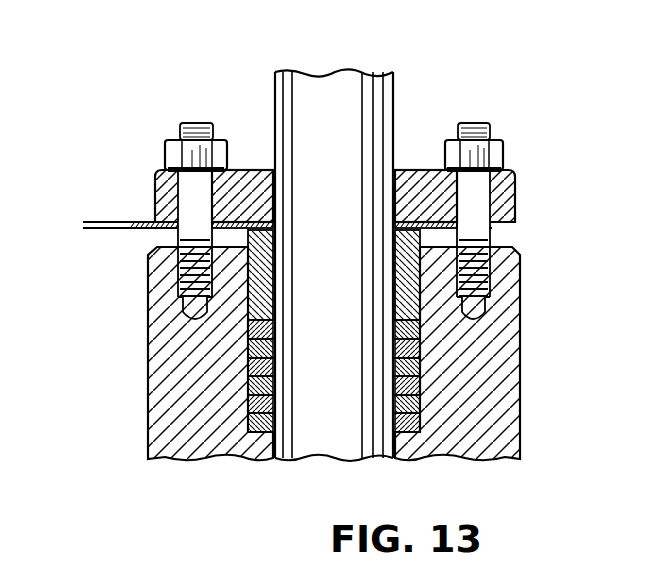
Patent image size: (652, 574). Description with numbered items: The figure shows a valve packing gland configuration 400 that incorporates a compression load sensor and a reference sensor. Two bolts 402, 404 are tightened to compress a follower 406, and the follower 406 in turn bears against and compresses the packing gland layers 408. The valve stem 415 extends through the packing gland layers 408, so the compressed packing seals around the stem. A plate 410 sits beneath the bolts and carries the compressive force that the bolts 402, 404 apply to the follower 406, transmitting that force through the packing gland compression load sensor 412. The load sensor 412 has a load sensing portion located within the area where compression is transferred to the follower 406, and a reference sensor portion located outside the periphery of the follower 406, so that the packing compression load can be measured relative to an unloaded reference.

The valve packing gland configuration 400 is at (137, 370).
The bolt 402 is at (192, 122).
The bolt 404 is at (478, 122).
The follower 406 is at (420, 302).
The packing gland layers 408 is at (420, 388).
The plate 410 is at (514, 200).
The packing gland compression load sensor 412 is at (110, 228).
The valve stem 415 is at (390, 92).